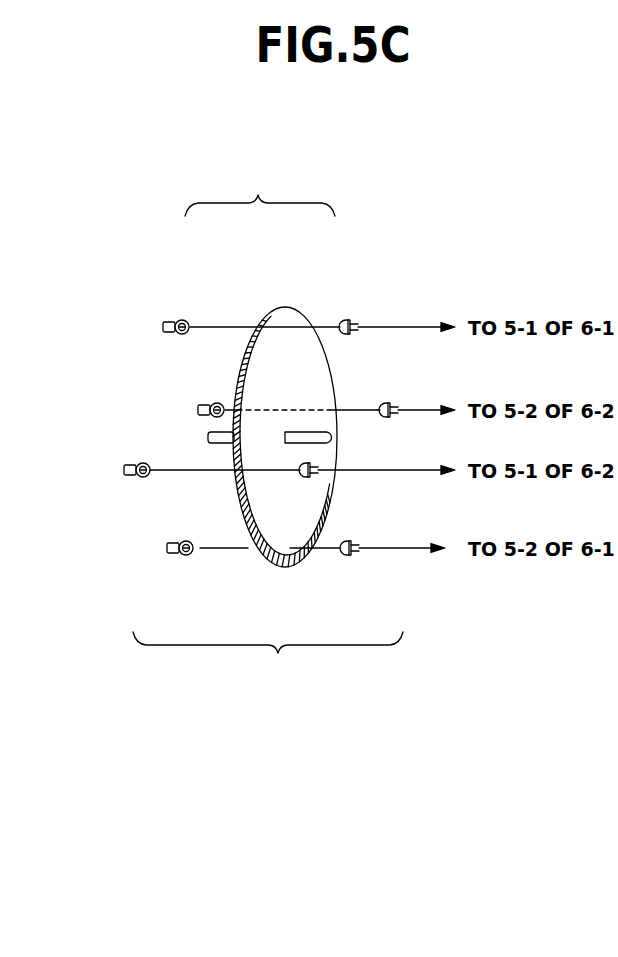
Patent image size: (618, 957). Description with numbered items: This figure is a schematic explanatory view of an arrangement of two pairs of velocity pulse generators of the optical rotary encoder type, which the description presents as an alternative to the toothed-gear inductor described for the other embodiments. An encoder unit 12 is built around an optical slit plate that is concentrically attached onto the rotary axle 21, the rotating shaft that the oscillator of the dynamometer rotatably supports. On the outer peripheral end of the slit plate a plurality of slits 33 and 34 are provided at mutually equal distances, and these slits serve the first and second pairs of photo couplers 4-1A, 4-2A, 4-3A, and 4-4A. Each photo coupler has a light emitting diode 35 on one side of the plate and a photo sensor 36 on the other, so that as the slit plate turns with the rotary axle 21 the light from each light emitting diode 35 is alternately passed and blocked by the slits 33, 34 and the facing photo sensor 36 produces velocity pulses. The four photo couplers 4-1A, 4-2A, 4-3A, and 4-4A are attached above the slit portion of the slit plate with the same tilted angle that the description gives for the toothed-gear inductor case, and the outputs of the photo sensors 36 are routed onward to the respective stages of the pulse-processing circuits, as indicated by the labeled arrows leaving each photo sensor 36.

The rotary encoder unit 12 is at (152, 292).
The rotary axle 21 is at (322, 441).
The slits 33 is at (258, 562).
The slits 34 is at (306, 562).
The light emitting diode 35 is at (182, 319).
The photo sensor 36 is at (343, 320).
The photo coupler 4-1A is at (260, 192).
The photo coupler 4-2A is at (268, 661).
The photo coupler 4-3A is at (155, 513).
The photo coupler 4-4A is at (402, 358).